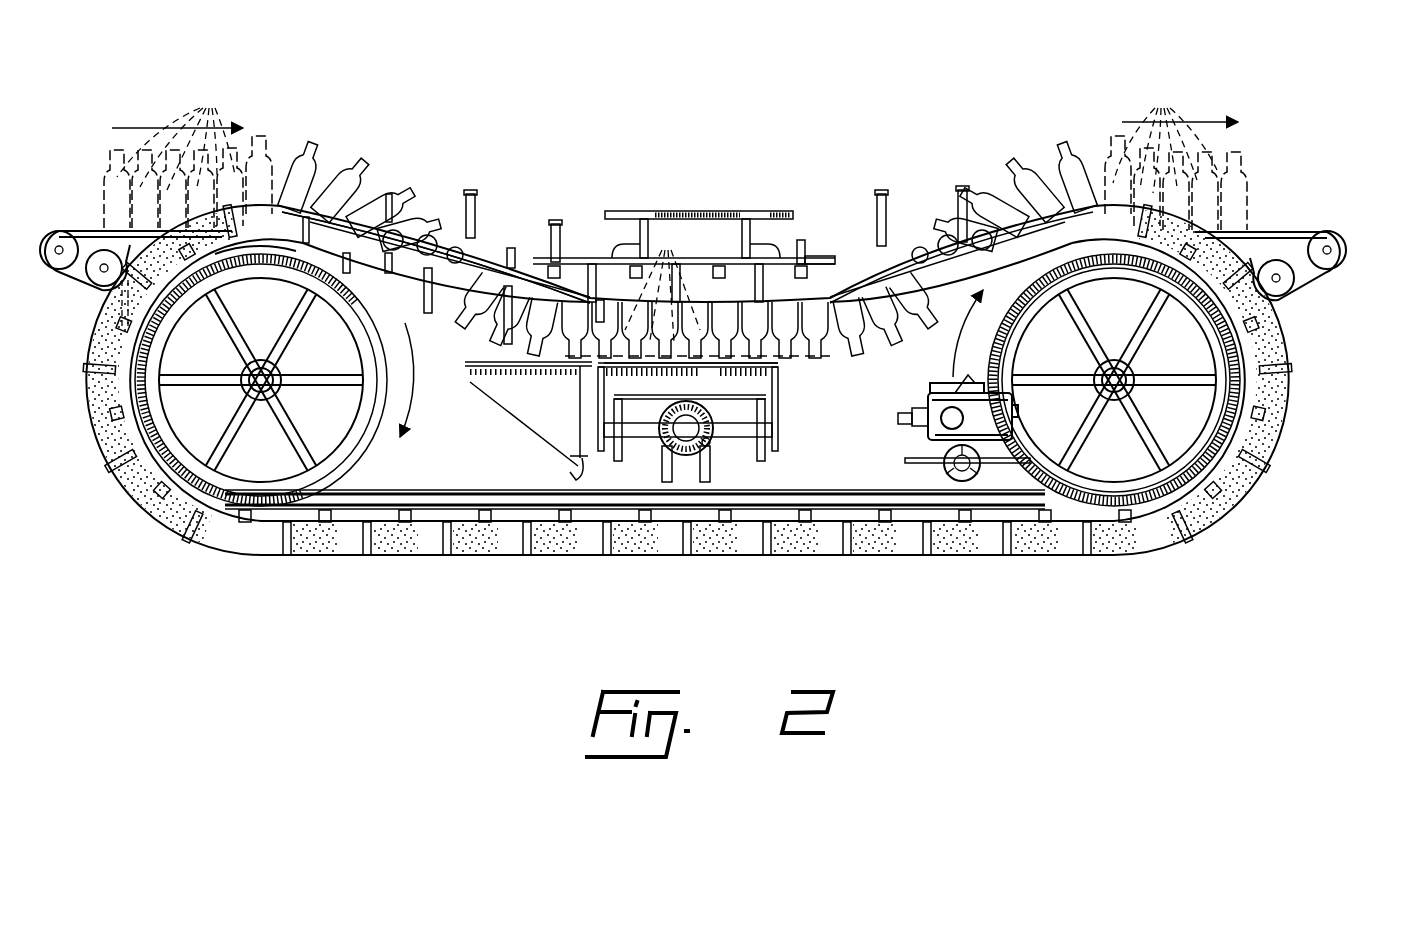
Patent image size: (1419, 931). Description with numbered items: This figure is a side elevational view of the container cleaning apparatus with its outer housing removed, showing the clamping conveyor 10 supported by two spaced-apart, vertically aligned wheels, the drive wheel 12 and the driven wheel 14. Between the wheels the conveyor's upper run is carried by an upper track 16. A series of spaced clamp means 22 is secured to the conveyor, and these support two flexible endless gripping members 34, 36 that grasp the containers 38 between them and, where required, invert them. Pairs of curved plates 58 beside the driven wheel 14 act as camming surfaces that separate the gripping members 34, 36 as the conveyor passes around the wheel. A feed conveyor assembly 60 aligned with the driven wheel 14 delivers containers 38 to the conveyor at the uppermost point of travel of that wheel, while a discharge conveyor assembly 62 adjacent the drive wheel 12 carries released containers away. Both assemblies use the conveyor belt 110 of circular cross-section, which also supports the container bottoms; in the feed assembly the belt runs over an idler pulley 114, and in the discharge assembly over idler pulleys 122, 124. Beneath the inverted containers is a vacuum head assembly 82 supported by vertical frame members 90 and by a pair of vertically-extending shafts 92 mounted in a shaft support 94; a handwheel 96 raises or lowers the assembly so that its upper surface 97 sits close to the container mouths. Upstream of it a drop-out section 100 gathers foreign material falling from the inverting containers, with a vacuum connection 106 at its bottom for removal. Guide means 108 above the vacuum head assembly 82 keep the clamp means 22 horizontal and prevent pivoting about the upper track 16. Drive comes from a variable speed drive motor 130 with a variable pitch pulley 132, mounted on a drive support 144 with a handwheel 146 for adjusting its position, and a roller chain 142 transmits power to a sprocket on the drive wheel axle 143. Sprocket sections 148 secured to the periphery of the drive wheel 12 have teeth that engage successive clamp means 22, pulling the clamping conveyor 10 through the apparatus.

The clamping conveyor 10 is at (810, 226).
The drive wheel 12 is at (1137, 350).
The driven wheel 14 is at (275, 352).
The upper track 16 is at (812, 257).
The clamp means 22 is at (466, 200).
The flexible endless gripping member 34 is at (483, 250).
The second flexible endless gripping member 36 is at (505, 275).
The containers 38 is at (677, 210).
The curved plates 58 is at (278, 243).
The feed conveyor assembly 60 is at (92, 215).
The discharge conveyor assembly 62 is at (1258, 226).
The vacuum head assembly 82 is at (778, 390).
The vertical frame members 90 is at (694, 470).
The vertically-extending shafts 92 is at (627, 449).
The shaft support 94 is at (744, 430).
The handwheel 96 is at (670, 417).
The upper surface 97 is at (774, 361).
The drop-out section 100 is at (510, 419).
The vacuum connection 106 is at (568, 465).
The guide means 108 is at (688, 262).
The conveyor belt 110 is at (58, 232).
The idler pulley 114 is at (54, 242).
The idler pulley 122 is at (1288, 288).
The idler pulley 124 is at (1340, 242).
The variable speed drive motor 130 is at (992, 420).
The variable pitch pulley 132 is at (903, 427).
The roller chain 142 is at (966, 389).
The drive wheel axle 143 is at (1120, 387).
The drive support 144 is at (923, 470).
The handwheel 146 is at (963, 473).
The sprocket sections 148 is at (1007, 327).